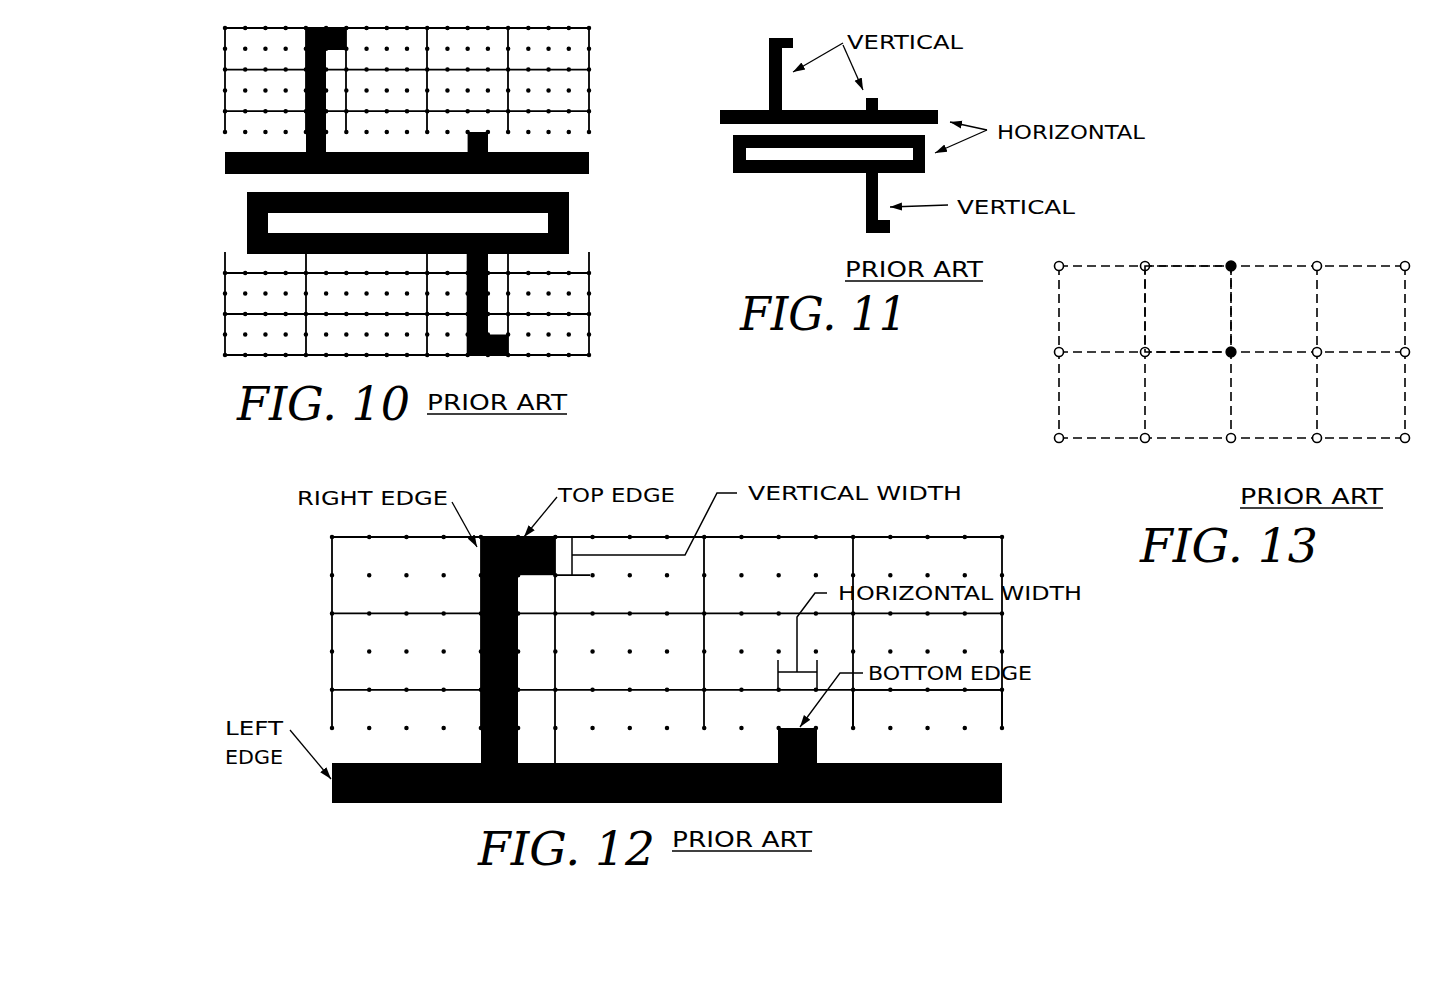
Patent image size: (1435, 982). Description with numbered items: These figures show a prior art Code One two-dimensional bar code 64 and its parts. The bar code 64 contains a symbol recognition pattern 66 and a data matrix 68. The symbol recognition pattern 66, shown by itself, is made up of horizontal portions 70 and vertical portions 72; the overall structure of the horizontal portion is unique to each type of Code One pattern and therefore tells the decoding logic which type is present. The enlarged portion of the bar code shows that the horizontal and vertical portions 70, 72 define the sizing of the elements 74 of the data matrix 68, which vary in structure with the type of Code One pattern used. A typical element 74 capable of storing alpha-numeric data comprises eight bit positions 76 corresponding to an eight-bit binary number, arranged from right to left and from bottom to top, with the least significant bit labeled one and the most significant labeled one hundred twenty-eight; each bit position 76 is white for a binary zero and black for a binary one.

In FIG. 10, the bar code 64 is at (446, 215).
In FIG. 10, the symbol recognition pattern 66 is at (587, 207).
In FIG. 11, the symbol recognition pattern 66 is at (873, 137).
In FIG. 12, the symbol recognition pattern 66 is at (673, 699).
In FIG. 10, the data matrix 68 is at (593, 93).
In FIG. 12, the data matrix 68 is at (1017, 642).
In FIG. 11, the horizontal portions 70 is at (933, 108).
In FIG. 12, the horizontal portions 70 is at (1005, 775).
In FIG. 11, the vertical portions 72 is at (768, 86).
In FIG. 12, the vertical portions 72 is at (478, 638).
In FIG. 13, the elements 74 is at (1047, 343).
In FIG. 12, the elements 74 is at (945, 535).
In FIG. 13, the bit positions 76 is at (1170, 280).
In FIG. 12, the bit positions 76 is at (980, 712).